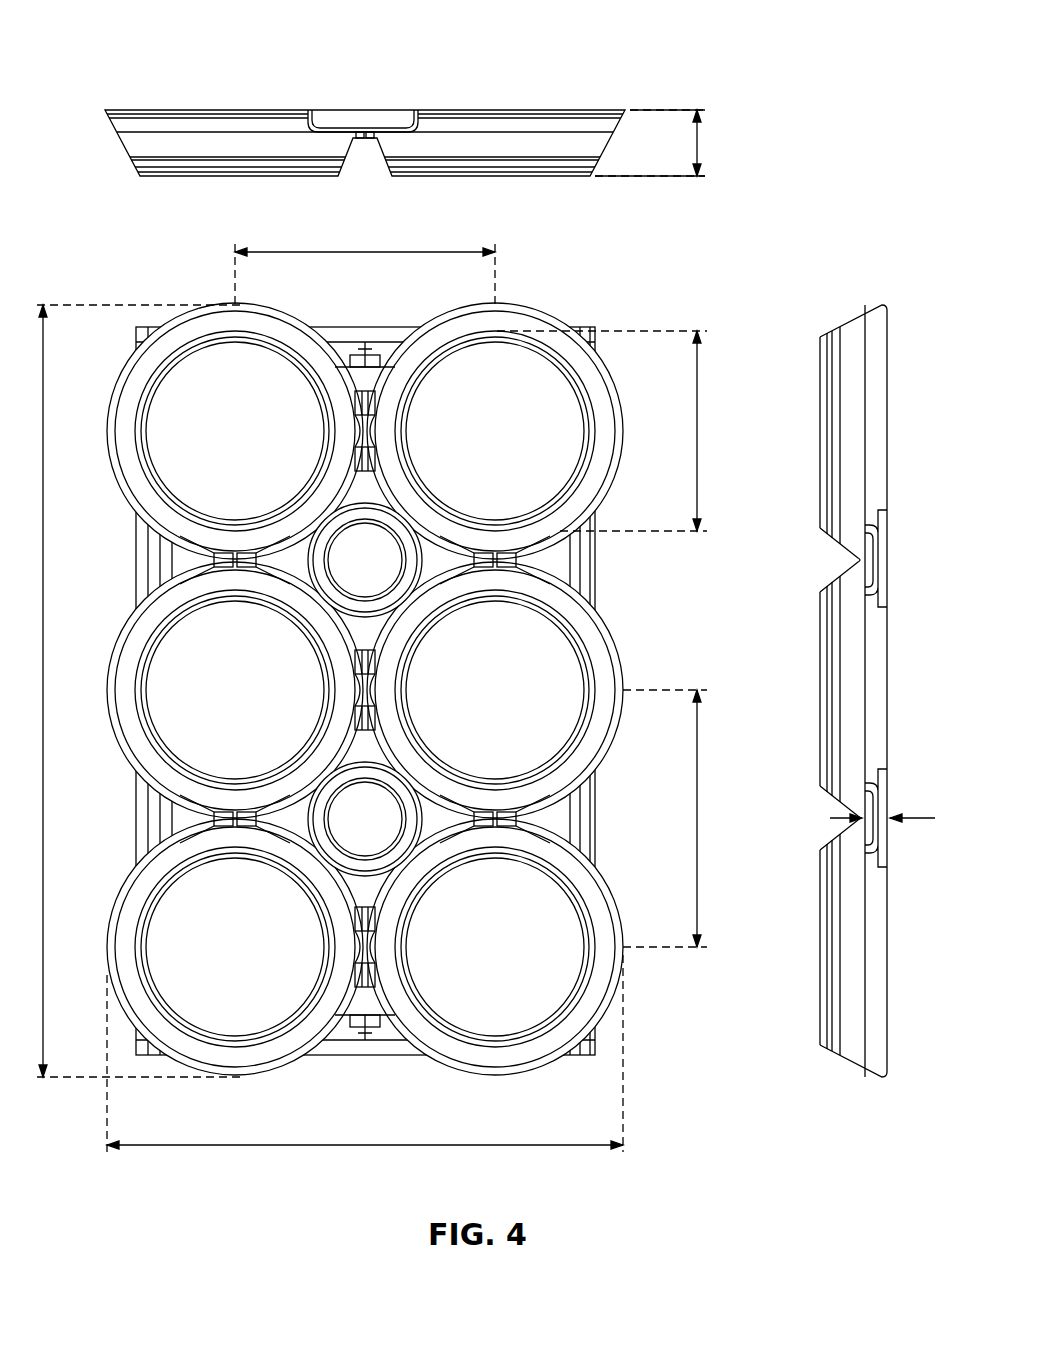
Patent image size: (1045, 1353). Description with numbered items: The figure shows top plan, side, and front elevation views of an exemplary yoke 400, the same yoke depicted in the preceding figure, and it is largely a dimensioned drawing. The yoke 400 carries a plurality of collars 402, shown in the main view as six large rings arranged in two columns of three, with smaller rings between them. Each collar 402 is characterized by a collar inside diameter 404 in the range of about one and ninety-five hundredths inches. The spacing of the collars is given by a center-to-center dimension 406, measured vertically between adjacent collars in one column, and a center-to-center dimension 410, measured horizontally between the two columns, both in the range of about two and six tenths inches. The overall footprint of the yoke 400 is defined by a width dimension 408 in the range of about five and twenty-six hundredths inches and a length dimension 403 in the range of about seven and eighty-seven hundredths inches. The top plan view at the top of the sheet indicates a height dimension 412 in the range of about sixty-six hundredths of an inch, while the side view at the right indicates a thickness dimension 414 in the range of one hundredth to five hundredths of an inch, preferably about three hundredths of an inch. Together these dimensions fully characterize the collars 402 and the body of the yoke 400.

The yoke 400 is at (119, 49).
The collars 402 is at (142, 350).
The length dimension 403 is at (46, 575).
The collar inside diameter 404 is at (700, 432).
The center-to-center dimension 406 is at (700, 822).
The width dimension 408 is at (368, 1142).
The center-to-center dimension 410 is at (366, 257).
The height dimension 412 is at (700, 142).
The thickness dimension 414 is at (930, 822).